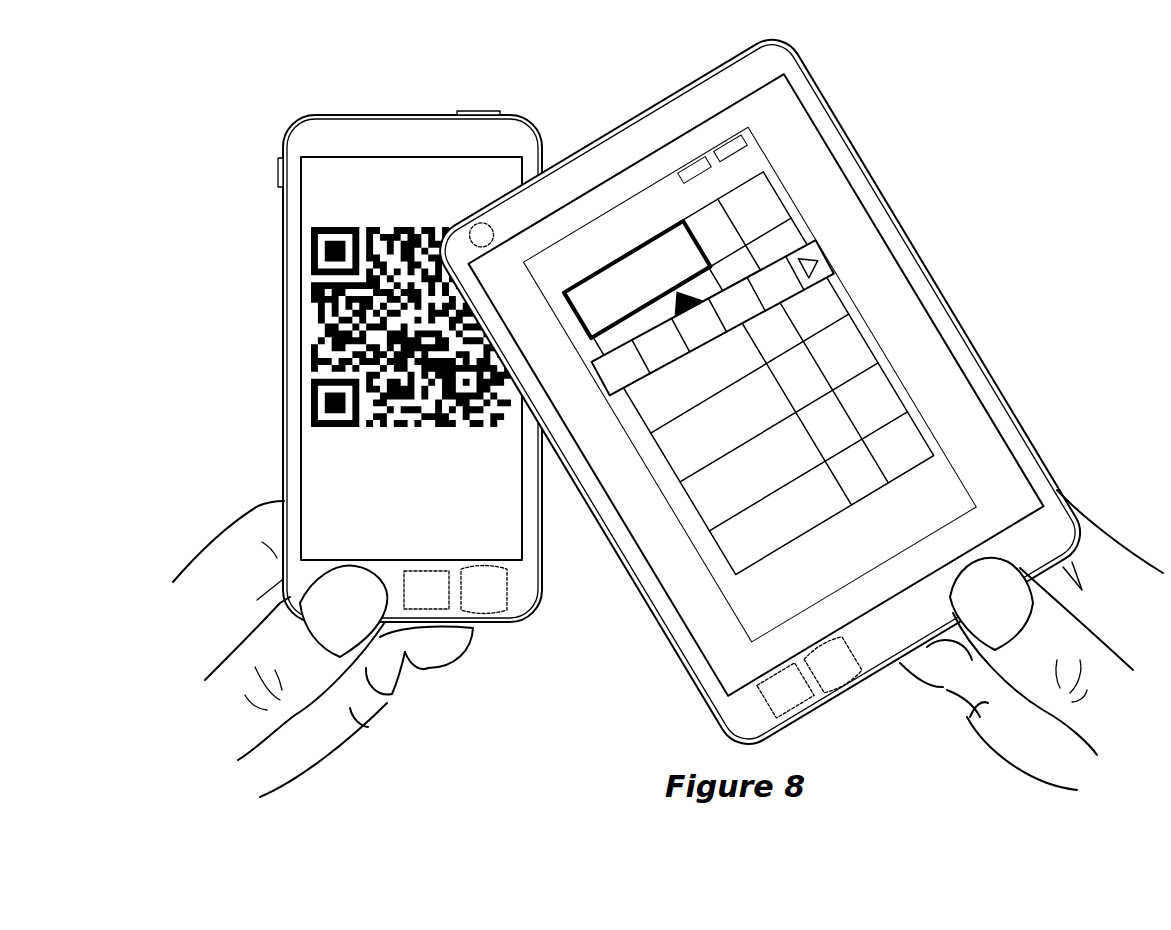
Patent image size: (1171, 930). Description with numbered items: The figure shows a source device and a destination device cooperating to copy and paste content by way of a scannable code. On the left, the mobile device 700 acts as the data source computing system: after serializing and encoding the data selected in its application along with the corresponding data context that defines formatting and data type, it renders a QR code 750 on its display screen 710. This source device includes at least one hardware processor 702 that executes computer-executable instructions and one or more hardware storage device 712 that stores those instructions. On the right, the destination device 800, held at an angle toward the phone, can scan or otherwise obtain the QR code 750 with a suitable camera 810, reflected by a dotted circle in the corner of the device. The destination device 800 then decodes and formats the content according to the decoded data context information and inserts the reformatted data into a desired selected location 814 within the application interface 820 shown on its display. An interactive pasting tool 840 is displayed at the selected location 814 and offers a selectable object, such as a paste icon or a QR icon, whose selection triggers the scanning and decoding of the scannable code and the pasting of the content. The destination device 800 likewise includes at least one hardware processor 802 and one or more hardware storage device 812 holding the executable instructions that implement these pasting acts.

The mobile device 700 is at (270, 101).
The display screen 710 is at (378, 163).
The QR code 750 is at (300, 293).
The hardware processor 702 is at (426, 590).
The hardware storage device 712 is at (484, 590).
The destination device 800 is at (840, 96).
The camera 810 is at (466, 223).
The selected location 814 is at (619, 245).
The interactive pasting tool 840 is at (824, 246).
The application interface 820 is at (988, 511).
The hardware processor 802 is at (785, 690).
The hardware storage device 812 is at (832, 665).